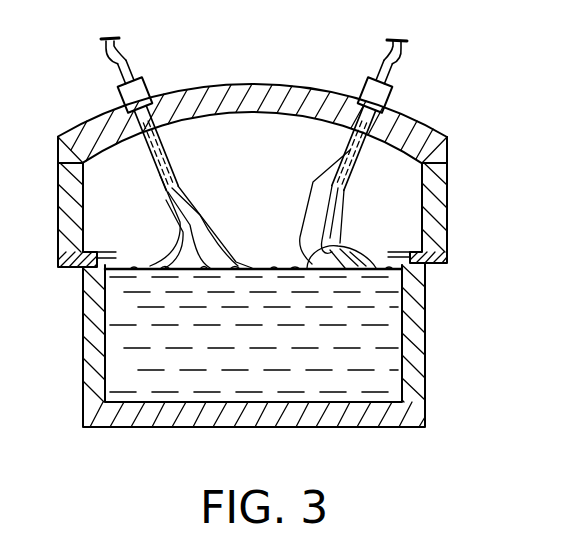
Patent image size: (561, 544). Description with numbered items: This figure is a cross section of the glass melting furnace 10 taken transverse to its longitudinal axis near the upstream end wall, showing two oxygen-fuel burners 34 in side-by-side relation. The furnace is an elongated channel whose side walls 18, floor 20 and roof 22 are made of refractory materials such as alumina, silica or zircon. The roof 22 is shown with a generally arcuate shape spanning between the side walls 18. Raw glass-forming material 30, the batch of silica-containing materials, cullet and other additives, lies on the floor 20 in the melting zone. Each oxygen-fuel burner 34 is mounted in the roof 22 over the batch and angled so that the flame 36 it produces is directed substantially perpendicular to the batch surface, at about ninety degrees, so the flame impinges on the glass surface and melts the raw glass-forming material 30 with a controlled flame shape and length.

The glass melting furnace 10 is at (279, 253).
The side walls 18 is at (58, 214).
The floor 20 is at (344, 427).
The roof 22 is at (245, 86).
The raw glass-forming material 30 is at (403, 290).
The oxygen-fuel burner 34 is at (105, 63).
The flame 36 is at (312, 213).